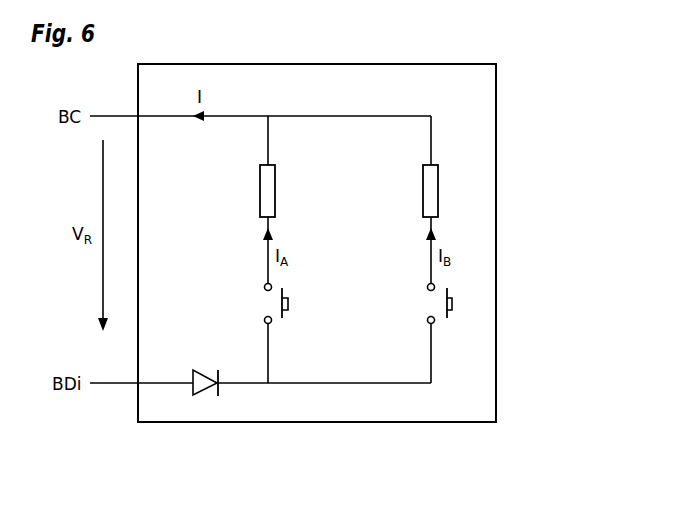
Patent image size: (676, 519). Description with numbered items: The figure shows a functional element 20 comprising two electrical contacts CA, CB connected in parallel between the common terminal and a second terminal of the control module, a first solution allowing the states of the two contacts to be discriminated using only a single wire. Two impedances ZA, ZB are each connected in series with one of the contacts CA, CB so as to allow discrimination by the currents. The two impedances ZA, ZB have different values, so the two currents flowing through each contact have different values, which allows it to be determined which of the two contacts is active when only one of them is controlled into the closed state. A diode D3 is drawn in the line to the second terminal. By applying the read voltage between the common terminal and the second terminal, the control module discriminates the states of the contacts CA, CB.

The functional element 20 is at (496, 142).
The diode D3 is at (204, 373).
The impedance ZA is at (283, 191).
The impedance ZB is at (445, 191).
The electrical contact CA is at (291, 304).
The electrical contact CB is at (454, 304).